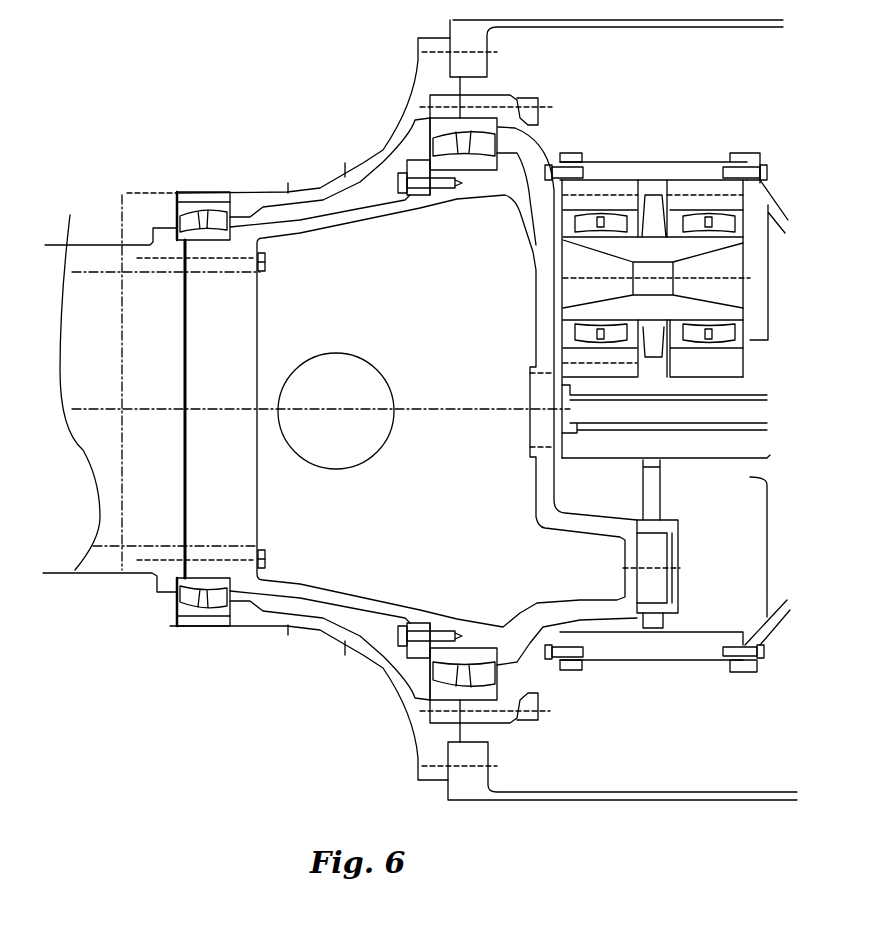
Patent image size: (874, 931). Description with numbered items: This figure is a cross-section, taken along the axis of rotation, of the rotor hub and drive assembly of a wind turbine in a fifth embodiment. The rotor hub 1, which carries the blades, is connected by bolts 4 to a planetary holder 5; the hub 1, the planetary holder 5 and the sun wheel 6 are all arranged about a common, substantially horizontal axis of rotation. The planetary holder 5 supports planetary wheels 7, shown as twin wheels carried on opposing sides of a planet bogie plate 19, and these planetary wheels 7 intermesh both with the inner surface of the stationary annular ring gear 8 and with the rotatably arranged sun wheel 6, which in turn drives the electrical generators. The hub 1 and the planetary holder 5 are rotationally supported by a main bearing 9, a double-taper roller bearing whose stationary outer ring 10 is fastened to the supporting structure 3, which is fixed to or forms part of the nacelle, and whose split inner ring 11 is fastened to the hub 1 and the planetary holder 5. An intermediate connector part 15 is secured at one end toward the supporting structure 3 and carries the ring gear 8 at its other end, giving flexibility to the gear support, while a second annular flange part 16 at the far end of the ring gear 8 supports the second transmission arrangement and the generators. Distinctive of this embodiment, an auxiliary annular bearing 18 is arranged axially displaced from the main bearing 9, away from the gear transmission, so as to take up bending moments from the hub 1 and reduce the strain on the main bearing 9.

The rotor hub 1 is at (88, 285).
The supporting structure 3 is at (728, 23).
The bolts 4 is at (270, 260).
The planetary holder 5 is at (535, 315).
The sun wheel 6 is at (672, 445).
The planetary wheels 7 is at (580, 235).
The ring gear 8 is at (657, 170).
The main bearing 9 is at (413, 143).
The outer ring 10 is at (437, 128).
The inner ring 11 is at (467, 160).
The intermediate connector part 15 is at (548, 135).
The second annular flange part 16 is at (775, 202).
The auxiliary annular bearing 18 is at (175, 213).
The planet bogie plate 19 is at (655, 503).